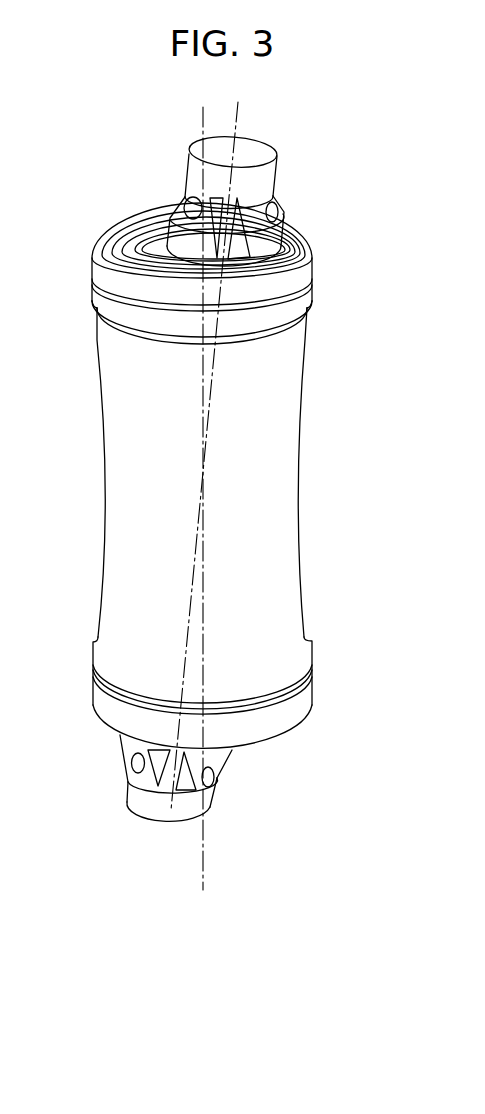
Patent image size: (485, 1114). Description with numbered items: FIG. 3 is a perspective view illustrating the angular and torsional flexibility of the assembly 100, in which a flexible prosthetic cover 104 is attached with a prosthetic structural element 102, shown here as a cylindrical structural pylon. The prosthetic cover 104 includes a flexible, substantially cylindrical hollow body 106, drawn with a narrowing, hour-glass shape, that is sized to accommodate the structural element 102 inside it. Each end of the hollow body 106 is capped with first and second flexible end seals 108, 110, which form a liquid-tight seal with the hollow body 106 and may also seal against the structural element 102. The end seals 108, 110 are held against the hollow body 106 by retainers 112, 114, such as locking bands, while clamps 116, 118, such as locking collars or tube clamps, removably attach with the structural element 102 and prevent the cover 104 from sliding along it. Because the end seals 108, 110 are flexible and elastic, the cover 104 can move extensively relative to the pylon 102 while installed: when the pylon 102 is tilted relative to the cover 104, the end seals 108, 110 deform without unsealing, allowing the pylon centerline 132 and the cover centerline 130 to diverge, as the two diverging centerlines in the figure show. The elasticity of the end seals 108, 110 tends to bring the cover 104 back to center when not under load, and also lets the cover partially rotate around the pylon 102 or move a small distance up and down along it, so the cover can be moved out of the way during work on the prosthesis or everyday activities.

The assembly 100 is at (327, 104).
The prosthetic structural element 102 is at (190, 152).
The flexible prosthetic cover 104 is at (338, 424).
The hollow body 106 is at (105, 503).
The first flexible end seal 108 is at (298, 230).
The second flexible end seal 110 is at (245, 747).
The retainer 112 is at (102, 284).
The retainer 114 is at (107, 697).
The clamp 116 is at (180, 203).
The clamp 118 is at (223, 777).
The cover centerline 130 is at (206, 480).
The pylon centerline 132 is at (213, 382).